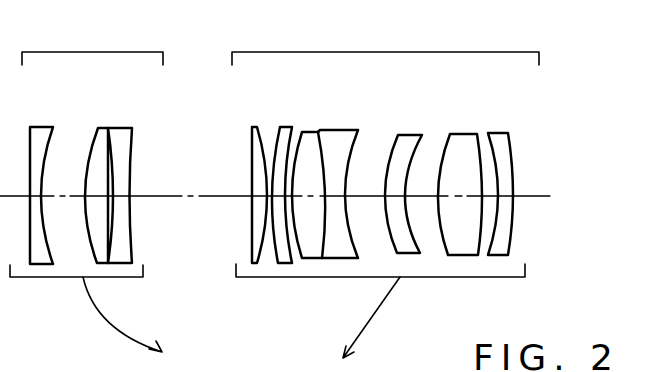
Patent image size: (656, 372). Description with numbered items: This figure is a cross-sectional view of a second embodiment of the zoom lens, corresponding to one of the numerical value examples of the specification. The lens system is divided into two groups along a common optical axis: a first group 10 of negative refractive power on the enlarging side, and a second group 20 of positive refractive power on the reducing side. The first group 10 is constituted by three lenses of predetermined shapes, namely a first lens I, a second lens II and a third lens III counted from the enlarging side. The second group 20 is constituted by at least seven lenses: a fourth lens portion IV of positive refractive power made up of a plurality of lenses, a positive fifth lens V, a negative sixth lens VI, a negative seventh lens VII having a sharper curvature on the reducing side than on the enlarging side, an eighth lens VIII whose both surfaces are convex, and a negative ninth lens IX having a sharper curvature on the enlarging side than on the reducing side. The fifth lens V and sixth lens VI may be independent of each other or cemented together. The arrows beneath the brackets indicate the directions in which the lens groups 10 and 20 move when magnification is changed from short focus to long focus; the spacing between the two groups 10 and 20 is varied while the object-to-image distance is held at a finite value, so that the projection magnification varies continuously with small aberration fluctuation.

The first group 10 is at (72, 52).
The second group 20 is at (363, 52).
The first lens I is at (43, 127).
The second lens II is at (102, 127).
The third lens III is at (125, 127).
The fourth lens portion IV is at (287, 128).
The fifth lens V is at (317, 131).
The sixth lens VI is at (342, 129).
The seventh lens VII is at (407, 134).
The eighth lens VIII is at (463, 133).
The ninth lens IX is at (500, 132).